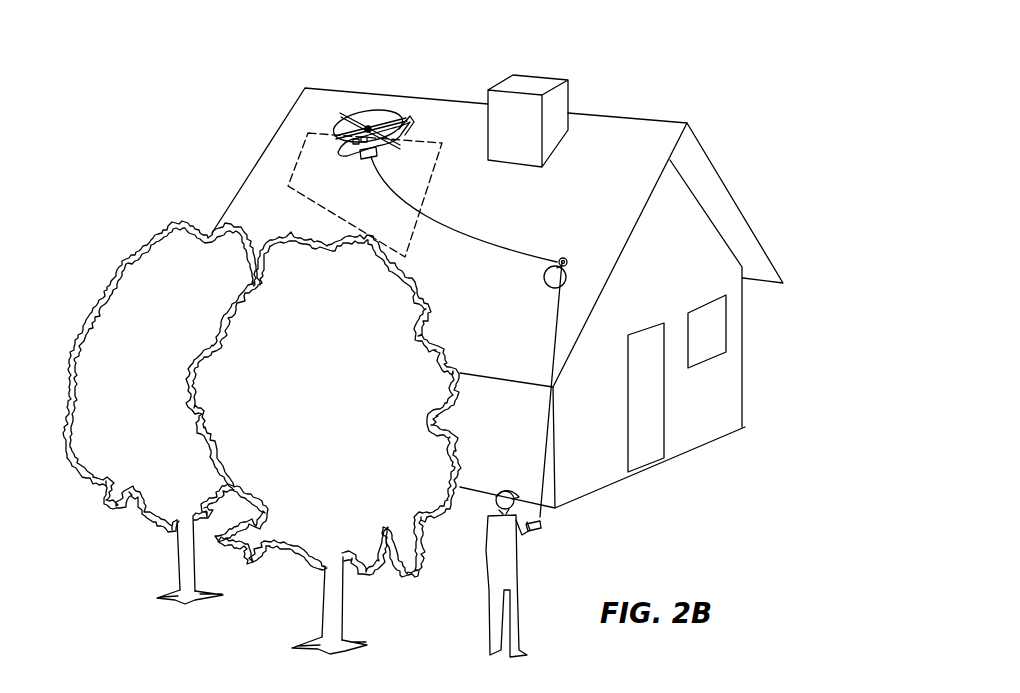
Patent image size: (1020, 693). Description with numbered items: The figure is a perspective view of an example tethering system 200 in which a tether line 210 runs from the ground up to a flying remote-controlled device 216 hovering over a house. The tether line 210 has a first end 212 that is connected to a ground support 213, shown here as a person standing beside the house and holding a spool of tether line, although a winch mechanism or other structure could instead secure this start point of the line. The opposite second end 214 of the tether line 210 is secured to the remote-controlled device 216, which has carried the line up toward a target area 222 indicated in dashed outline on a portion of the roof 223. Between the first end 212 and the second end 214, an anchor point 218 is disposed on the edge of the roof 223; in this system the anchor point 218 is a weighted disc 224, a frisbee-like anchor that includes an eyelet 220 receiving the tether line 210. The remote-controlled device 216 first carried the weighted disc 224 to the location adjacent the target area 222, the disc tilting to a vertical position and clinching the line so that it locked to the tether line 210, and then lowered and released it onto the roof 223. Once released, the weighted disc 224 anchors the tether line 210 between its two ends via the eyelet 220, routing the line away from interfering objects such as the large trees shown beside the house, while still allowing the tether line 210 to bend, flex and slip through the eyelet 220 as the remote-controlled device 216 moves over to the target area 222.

The tethering system 200 is at (686, 80).
The tether line 210 is at (547, 460).
The first end 212 is at (538, 480).
The ground support 213 is at (466, 575).
The second end 214 is at (377, 153).
The remote-controlled device 216 is at (370, 112).
The anchor point 218 is at (582, 275).
The eyelet 220 is at (566, 260).
The target area 222 is at (357, 192).
The roof 223 is at (501, 204).
The weighted disc 224 is at (557, 276).